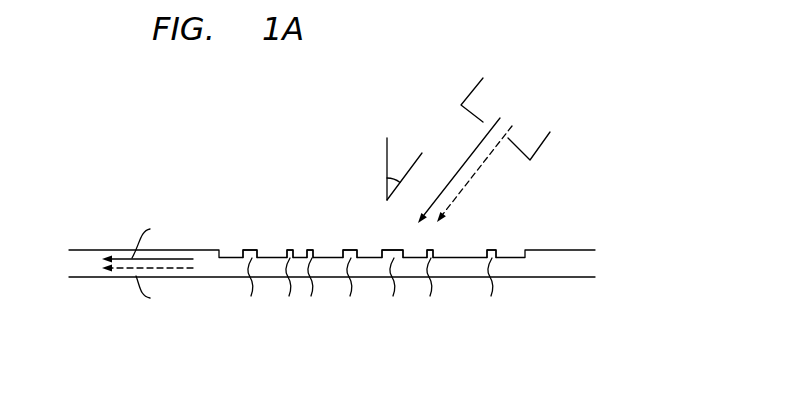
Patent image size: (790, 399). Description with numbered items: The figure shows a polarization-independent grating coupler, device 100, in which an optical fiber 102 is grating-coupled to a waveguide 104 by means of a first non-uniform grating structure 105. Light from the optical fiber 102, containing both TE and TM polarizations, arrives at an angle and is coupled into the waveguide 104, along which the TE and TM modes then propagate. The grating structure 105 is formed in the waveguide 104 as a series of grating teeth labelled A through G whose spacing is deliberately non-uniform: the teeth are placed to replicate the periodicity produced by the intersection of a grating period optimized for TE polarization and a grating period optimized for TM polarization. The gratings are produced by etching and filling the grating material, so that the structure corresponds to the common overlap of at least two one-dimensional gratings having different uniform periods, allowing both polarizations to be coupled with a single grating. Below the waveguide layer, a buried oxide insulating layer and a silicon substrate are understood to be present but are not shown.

The device 100 is at (128, 193).
The optical fiber 102 is at (475, 89).
The waveguide 104 is at (605, 263).
The first non-uniform grating structure 105 is at (333, 233).